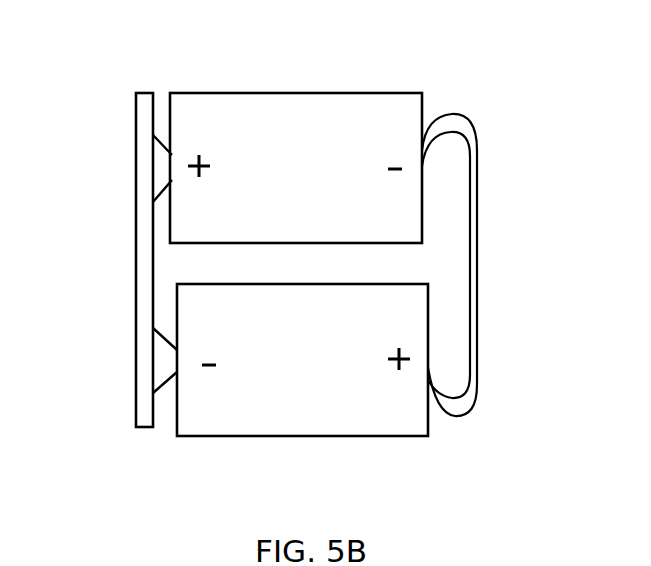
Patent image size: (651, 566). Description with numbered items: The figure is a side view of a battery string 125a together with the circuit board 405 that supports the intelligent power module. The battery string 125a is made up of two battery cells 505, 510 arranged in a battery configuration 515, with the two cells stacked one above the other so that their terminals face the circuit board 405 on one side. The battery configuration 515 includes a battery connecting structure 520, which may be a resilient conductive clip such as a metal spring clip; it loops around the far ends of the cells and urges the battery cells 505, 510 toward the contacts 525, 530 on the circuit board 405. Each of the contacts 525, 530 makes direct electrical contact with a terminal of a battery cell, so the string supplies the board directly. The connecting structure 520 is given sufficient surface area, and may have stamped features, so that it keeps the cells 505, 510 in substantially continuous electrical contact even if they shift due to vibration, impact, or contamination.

The circuit board 405 is at (135, 220).
The battery cell 505 is at (324, 176).
The battery cell 510 is at (324, 370).
The battery configuration 515 is at (478, 116).
The battery connecting structure 520 is at (478, 327).
The contact 525 is at (158, 170).
The contact 530 is at (158, 362).
The battery string 125a is at (153, 457).